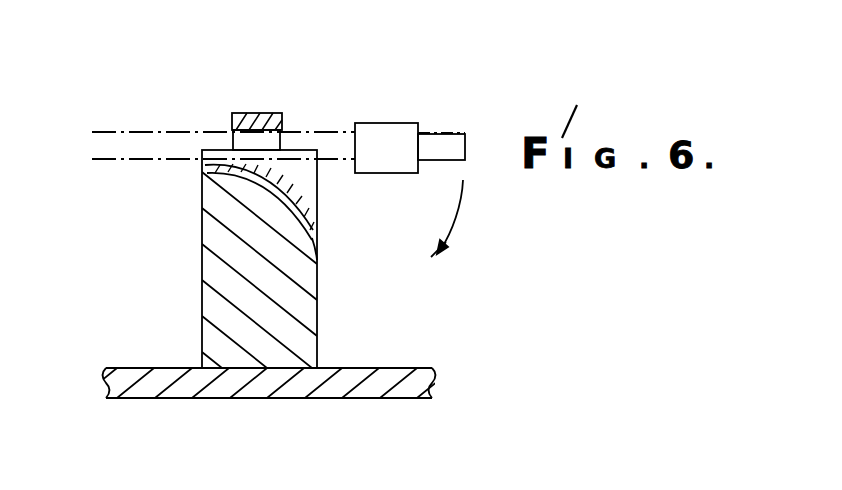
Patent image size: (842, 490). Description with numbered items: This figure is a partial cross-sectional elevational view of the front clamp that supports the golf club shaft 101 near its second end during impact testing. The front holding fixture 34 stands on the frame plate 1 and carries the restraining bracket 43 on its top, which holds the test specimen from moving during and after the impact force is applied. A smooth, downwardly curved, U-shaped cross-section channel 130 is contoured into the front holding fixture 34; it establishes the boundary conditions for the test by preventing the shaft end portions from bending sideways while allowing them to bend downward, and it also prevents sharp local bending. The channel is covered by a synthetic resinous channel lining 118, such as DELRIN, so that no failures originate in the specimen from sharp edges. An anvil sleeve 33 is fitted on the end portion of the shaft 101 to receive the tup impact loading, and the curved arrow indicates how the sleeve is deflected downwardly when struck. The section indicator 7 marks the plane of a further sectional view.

The frame plate 1 is at (364, 405).
The section line 7- 7 is at (282, 18).
The anvil sleeve 33 is at (402, 123).
The front holding fixture 34 is at (213, 285).
The restraining bracket 43 is at (270, 112).
The golf club shaft 101 is at (113, 138).
The channel lining 118 is at (266, 186).
The channel 130 is at (291, 189).